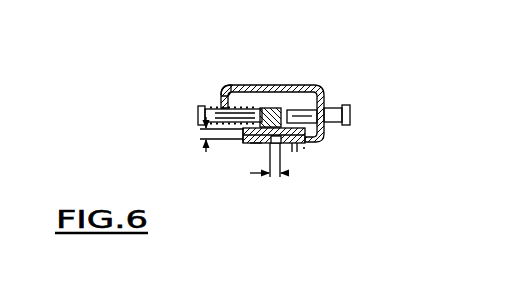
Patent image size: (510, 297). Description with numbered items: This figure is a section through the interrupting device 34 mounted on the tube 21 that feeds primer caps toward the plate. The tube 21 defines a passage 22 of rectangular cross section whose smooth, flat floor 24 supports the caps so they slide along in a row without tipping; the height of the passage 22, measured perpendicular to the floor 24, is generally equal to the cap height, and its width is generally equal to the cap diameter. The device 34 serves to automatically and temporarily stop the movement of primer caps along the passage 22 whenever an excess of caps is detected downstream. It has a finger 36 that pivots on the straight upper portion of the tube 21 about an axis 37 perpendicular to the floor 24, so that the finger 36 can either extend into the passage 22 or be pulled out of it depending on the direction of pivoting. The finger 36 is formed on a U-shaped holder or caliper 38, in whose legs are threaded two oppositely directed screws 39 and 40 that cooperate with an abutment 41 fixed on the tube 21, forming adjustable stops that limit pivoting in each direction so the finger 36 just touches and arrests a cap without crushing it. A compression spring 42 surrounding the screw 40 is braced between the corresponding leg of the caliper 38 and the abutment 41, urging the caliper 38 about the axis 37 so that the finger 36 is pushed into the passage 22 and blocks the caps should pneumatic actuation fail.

The device 34 is at (208, 86).
The U-shaped holder or caliper 38 is at (310, 86).
The compression spring 42 is at (224, 86).
The screw 40 is at (205, 117).
The abutment 41 is at (273, 107).
The screw 39 is at (348, 108).
The passage 22 is at (284, 146).
The tube 21 is at (247, 144).
The floor 24 is at (257, 145).
The finger 36 is at (295, 148).
The axis 37 is at (308, 148).